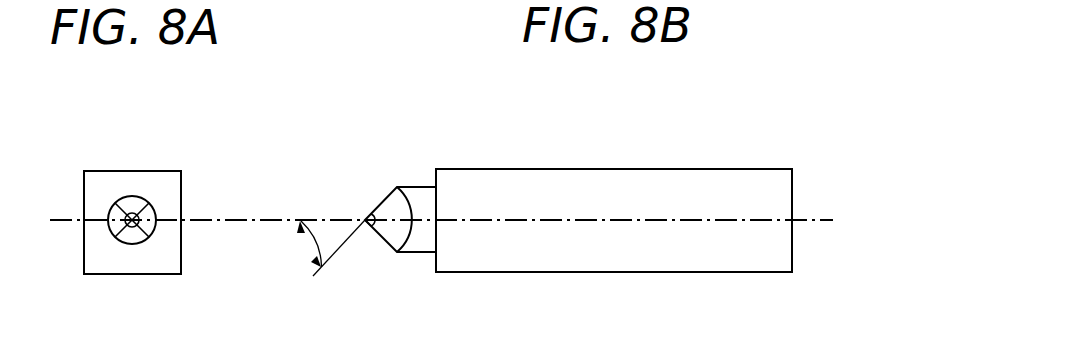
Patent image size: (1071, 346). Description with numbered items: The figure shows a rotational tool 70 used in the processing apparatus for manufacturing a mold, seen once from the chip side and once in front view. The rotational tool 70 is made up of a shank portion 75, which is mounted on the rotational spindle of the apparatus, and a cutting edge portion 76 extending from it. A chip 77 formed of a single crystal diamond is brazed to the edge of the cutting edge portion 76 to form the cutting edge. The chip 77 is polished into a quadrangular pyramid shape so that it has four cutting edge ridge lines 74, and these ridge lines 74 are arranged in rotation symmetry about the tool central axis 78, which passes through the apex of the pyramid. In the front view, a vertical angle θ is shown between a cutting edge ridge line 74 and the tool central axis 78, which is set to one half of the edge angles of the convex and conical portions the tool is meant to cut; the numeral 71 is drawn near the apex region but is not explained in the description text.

In FIG. 8A, the rotational tool 70 is at (83, 108).
In FIG. 8B, the reflecting surface 71 is at (362, 215).
In FIG. 8A, the cutting edge ridge lines 74 is at (124, 207).
In FIG. 8B, the cutting edge ridge lines 74 is at (371, 230).
In FIG. 8A, the shank portion 75 is at (95, 171).
In FIG. 8B, the shank portion 75 is at (518, 169).
In FIG. 8A, the cutting edge portion 76 is at (109, 214).
In FIG. 8B, the cutting edge portion 76 is at (384, 190).
In FIG. 8A, the chip 77 is at (137, 215).
In FIG. 8B, the chip 77 is at (366, 212).
In FIG. 8A, the tool central axis 78 is at (235, 224).